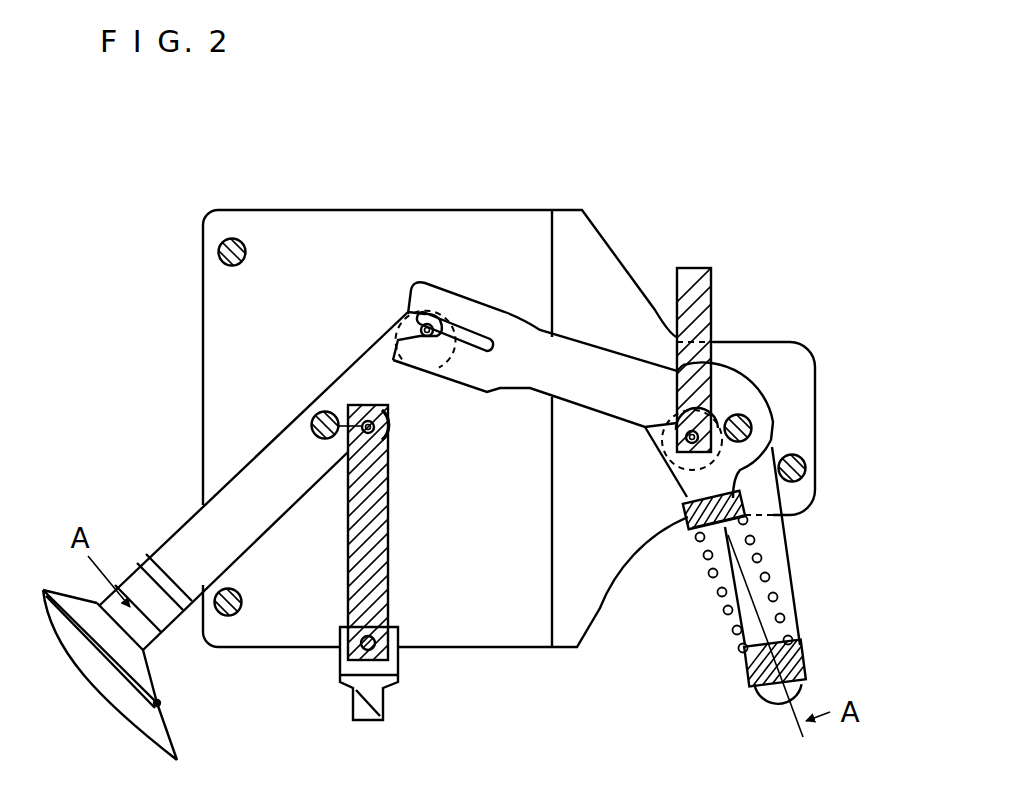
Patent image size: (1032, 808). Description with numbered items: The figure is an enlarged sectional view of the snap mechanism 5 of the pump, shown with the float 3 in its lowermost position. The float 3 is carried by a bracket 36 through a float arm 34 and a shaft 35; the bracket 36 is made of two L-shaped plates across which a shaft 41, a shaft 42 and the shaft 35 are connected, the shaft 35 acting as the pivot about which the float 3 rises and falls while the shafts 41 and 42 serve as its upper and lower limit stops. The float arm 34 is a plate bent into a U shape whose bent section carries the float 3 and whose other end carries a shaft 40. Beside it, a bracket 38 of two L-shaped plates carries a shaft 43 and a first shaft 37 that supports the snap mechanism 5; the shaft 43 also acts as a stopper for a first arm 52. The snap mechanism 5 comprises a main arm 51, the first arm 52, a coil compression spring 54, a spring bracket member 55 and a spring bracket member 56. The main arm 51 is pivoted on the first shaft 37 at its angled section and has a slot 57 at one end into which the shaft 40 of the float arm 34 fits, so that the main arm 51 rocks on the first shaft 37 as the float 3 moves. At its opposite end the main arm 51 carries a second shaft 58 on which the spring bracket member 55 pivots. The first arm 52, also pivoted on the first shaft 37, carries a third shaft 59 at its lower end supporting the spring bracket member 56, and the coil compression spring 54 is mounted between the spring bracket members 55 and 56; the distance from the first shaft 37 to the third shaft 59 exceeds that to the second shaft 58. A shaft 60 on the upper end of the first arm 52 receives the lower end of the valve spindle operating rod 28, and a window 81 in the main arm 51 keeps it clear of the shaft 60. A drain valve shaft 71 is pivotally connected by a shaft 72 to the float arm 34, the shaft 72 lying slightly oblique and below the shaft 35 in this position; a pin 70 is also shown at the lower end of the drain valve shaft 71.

The float 3 is at (163, 733).
The snap mechanism 5 is at (826, 401).
The valve spindle operating rod 28 is at (712, 284).
The float arm 34 is at (245, 470).
The shaft 35 is at (313, 417).
The bracket 36 is at (341, 222).
The first shaft 37 is at (752, 429).
The bracket 38 is at (592, 232).
The shaft 40 is at (421, 327).
The shaft 41 is at (218, 252).
The shaft 42 is at (230, 616).
The shaft 43 is at (806, 468).
The main arm 51 is at (533, 390).
The first arm 52 is at (782, 560).
The coil compression spring 54 is at (722, 593).
The spring bracket member 55 is at (690, 527).
The spring bracket member 56 is at (755, 672).
The slot 57 is at (480, 338).
The second shaft 58 is at (685, 498).
The third shaft 59 is at (800, 653).
The shaft 60 is at (702, 432).
The pin 70 is at (375, 643).
The drain valve shaft 71 is at (378, 522).
The shaft 72 is at (364, 420).
The window 81 is at (680, 428).